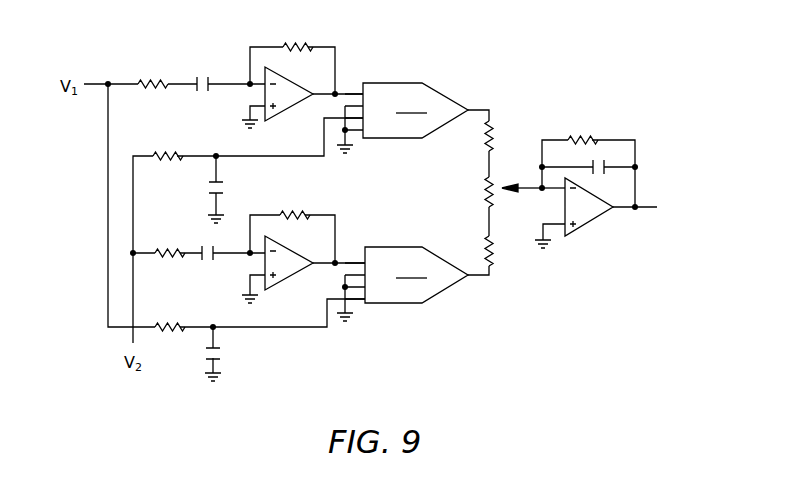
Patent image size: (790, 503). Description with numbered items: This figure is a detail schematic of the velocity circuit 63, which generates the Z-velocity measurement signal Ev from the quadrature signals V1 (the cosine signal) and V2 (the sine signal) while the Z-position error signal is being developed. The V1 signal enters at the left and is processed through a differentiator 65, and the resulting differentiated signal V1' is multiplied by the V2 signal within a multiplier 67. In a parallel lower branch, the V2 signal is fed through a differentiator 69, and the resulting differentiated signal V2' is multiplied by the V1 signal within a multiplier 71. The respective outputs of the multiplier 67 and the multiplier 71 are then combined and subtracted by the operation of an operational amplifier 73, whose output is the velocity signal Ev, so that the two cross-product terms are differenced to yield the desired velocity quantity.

The velocity circuit 63 is at (228, 46).
The differentiator 65 is at (284, 42).
The multiplier 67 is at (440, 83).
The differentiator 69 is at (289, 290).
The multiplier 71 is at (430, 300).
The operational amplifier 73 is at (590, 222).